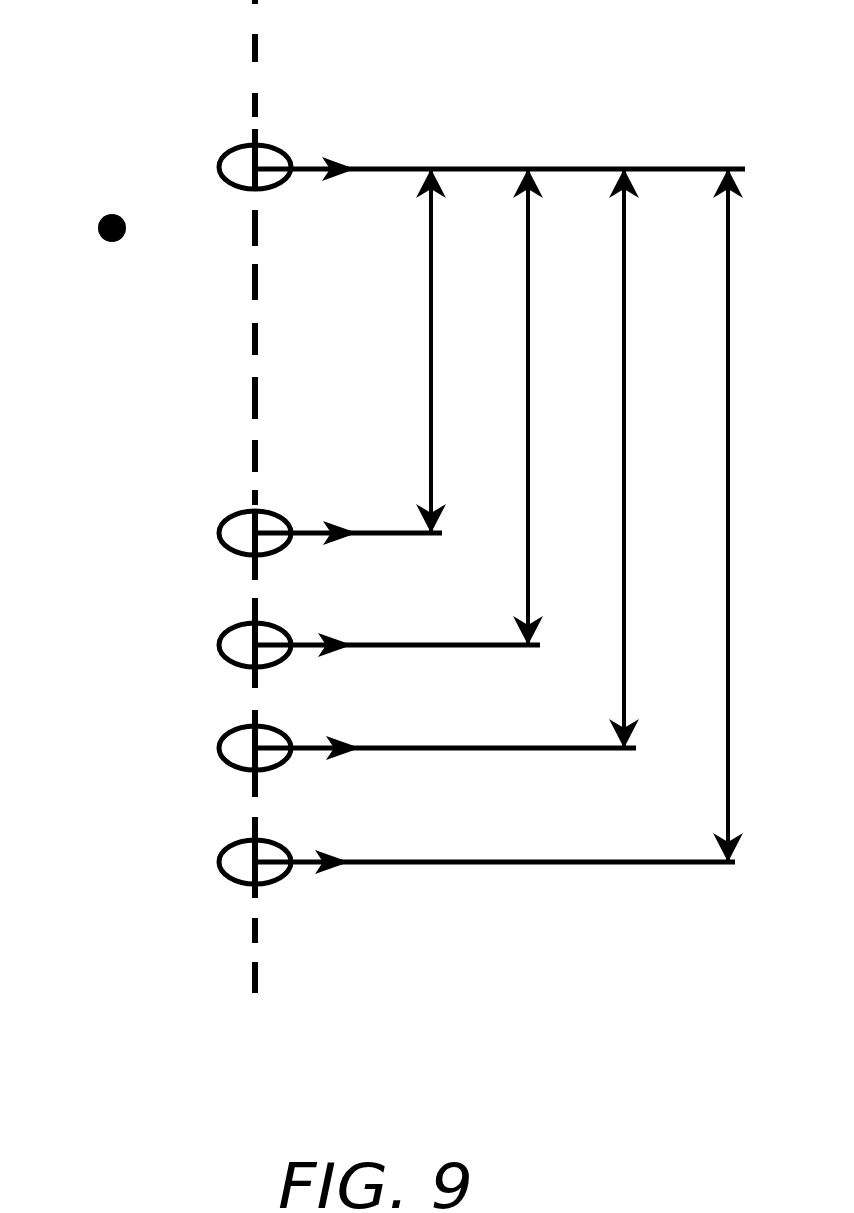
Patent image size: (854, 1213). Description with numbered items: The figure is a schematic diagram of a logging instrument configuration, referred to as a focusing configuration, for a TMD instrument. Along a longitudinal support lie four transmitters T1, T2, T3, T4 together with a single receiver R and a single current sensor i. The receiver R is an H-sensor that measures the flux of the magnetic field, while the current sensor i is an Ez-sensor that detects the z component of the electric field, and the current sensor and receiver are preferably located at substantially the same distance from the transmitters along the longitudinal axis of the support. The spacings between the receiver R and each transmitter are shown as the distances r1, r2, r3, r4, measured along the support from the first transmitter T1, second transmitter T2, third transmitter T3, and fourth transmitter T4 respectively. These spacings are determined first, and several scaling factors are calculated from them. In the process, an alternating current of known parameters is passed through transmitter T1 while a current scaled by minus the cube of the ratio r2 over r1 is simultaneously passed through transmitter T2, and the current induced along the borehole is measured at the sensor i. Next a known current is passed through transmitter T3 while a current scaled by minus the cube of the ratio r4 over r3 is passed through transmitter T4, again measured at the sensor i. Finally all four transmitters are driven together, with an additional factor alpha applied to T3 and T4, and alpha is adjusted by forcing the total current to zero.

The receiver R is at (460, 134).
The first transmitter T1 is at (330, 568).
The second transmitter T2 is at (379, 677).
The third transmitter T3 is at (427, 782).
The fourth transmitter T4 is at (477, 894).
The distance between first transmitter and receiver r1 is at (451, 351).
The distance between second transmitter and receiver r2 is at (547, 407).
The distance between third transmitter and receiver r3 is at (643, 458).
The distance between fourth transmitter and receiver r4 is at (747, 515).
The current sensor i is at (87, 205).